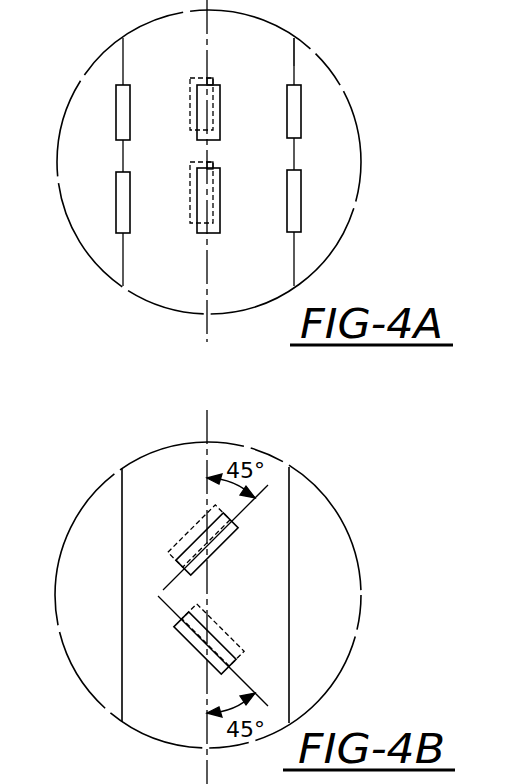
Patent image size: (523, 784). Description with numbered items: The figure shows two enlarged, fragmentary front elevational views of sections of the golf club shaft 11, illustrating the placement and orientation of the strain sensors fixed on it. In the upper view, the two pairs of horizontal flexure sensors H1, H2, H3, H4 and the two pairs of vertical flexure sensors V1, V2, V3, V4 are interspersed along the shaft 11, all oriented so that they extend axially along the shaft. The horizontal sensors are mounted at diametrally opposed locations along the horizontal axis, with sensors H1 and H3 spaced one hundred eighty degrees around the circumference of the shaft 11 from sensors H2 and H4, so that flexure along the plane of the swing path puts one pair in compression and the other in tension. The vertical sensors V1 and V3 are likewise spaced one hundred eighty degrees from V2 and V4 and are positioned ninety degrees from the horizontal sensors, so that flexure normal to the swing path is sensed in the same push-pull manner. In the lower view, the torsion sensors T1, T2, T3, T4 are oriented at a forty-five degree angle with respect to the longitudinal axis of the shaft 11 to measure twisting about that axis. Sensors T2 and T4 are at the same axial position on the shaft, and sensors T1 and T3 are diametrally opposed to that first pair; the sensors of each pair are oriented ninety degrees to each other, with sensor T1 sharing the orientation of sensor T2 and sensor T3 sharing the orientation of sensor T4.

In FIG. 4A, the horizontal flexure sensor H1 is at (109, 105).
In FIG. 4A, the horizontal flexure sensor H2 is at (312, 118).
In FIG. 4A, the horizontal flexure sensor H3 is at (104, 229).
In FIG. 4A, the horizontal flexure sensor H4 is at (310, 228).
In FIG. 4A, the vertical flexure sensor V1 is at (225, 112).
In FIG. 4A, the vertical flexure sensor V2 is at (186, 91).
In FIG. 4A, the vertical flexure sensor V3 is at (226, 200).
In FIG. 4A, the vertical flexure sensor V4 is at (186, 180).
In FIG. 4B, the torsion sensor T1 is at (215, 537).
In FIG. 4B, the torsion sensor T2 is at (193, 533).
In FIG. 4B, the torsion sensor T3 is at (213, 651).
In FIG. 4B, the torsion sensor T4 is at (216, 632).
In FIG. 4A, the shaft 11 is at (294, 66).
In FIG. 4B, the shaft 11 is at (289, 603).